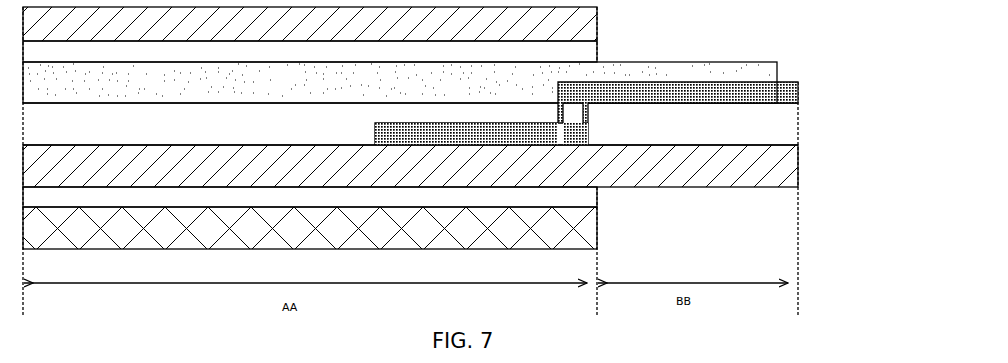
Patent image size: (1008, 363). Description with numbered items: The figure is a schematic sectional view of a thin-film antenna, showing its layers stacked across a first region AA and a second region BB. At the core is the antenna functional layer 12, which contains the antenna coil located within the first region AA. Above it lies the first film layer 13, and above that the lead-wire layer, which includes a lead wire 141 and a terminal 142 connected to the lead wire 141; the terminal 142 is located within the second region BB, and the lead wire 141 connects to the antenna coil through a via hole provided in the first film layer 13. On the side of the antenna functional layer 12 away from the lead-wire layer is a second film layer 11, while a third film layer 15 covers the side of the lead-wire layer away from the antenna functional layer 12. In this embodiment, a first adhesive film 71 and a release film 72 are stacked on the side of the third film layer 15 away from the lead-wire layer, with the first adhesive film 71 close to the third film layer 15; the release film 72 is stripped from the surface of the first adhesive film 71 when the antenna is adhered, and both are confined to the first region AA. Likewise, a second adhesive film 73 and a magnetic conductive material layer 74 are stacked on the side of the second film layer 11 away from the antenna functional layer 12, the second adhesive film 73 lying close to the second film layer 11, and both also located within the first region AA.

The release film 72 is at (577, 14).
The first adhesive film 71 is at (577, 47).
The third film layer 15 is at (762, 69).
The lead wire 141 is at (720, 97).
The terminal 142 is at (785, 98).
The antenna functional layer 12 is at (567, 141).
The first film layer 13 is at (768, 141).
The second film layer 11 is at (768, 178).
The second adhesive film 73 is at (577, 200).
The magnetic conductive material layer 74 is at (577, 235).